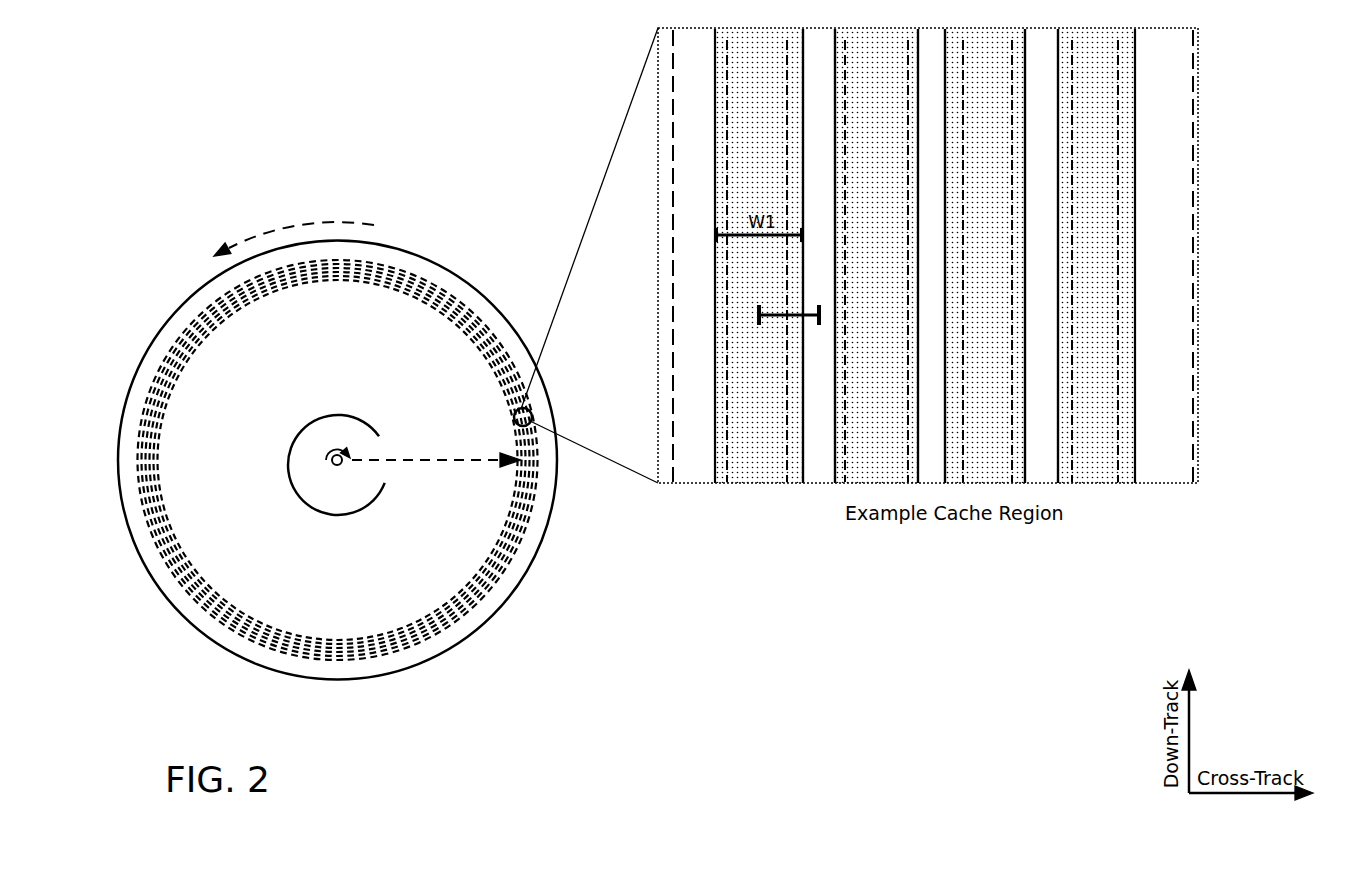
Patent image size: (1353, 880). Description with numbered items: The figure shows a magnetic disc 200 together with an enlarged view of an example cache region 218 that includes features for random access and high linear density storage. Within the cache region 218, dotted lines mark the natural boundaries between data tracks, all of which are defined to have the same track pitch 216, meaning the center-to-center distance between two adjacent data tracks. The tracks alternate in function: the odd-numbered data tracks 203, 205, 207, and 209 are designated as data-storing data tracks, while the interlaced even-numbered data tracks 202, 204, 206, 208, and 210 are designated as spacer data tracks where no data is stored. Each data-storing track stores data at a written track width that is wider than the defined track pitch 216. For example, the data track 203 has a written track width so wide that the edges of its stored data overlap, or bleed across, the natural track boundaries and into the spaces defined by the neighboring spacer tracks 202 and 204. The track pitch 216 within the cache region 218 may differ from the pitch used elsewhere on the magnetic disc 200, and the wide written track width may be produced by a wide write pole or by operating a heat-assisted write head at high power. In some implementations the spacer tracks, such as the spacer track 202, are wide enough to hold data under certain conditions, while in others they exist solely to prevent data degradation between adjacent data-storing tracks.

The magnetic disc 200 is at (276, 149).
The spacer data track 202 is at (689, 60).
The data-storing data track 203 is at (745, 60).
The spacer data track 204 is at (809, 60).
The data-storing data track 205 is at (864, 60).
The spacer data track 206 is at (922, 60).
The data-storing data track 207 is at (979, 60).
The spacer data track 208 is at (1032, 60).
The data-storing data track 209 is at (1089, 60).
The spacer data track 210 is at (1145, 60).
The track pitch 216 is at (789, 308).
The cache region 218 is at (637, 110).